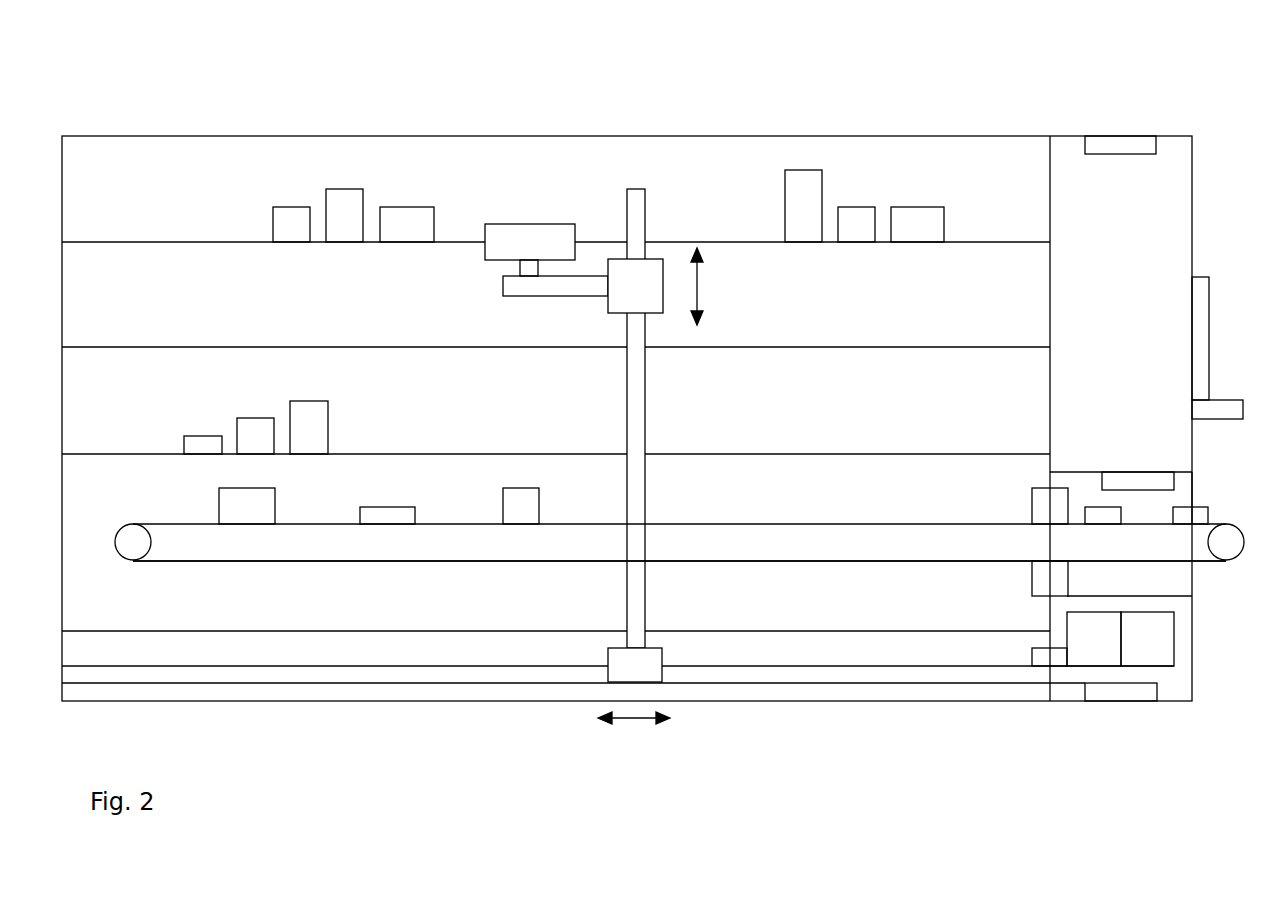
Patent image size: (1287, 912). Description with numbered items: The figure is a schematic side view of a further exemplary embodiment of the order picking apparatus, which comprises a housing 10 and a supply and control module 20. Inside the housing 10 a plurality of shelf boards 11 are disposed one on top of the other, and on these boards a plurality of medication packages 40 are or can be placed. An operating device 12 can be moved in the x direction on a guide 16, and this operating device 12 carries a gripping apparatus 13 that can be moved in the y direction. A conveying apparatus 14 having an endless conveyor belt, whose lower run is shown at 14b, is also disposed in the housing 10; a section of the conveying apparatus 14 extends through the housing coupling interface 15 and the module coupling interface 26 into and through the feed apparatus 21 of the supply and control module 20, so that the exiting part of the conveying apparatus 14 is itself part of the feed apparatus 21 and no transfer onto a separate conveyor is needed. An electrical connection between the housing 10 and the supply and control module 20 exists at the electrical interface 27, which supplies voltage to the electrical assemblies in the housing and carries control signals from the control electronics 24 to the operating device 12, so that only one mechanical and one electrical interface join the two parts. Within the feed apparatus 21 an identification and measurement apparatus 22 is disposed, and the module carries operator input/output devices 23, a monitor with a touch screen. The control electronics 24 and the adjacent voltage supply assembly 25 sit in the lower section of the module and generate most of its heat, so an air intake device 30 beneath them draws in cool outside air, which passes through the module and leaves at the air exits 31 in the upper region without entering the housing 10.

The housing 10 is at (293, 136).
The shelf boards 11 is at (133, 242).
The operating device 12 is at (634, 667).
The gripping apparatus 13 is at (530, 242).
The conveying apparatus 14 is at (327, 545).
The conveyor belt return run 14b is at (432, 562).
The housing coupling interface 15 is at (1040, 508).
The guide 16 is at (168, 684).
The supply and control module 20 is at (1173, 136).
The feed apparatus 21 is at (1195, 490).
The identification and measurement apparatus 22 is at (1138, 480).
The operator input/output devices 23 is at (1200, 343).
The control electronics 24 is at (1095, 641).
The voltage supply assembly 25 is at (1148, 641).
The module coupling interface 26 is at (1057, 577).
The electrical interface 27 is at (1040, 658).
The air intake device 30 is at (1120, 692).
The air exits 31 is at (1120, 145).
The medication packages 40 is at (909, 225).